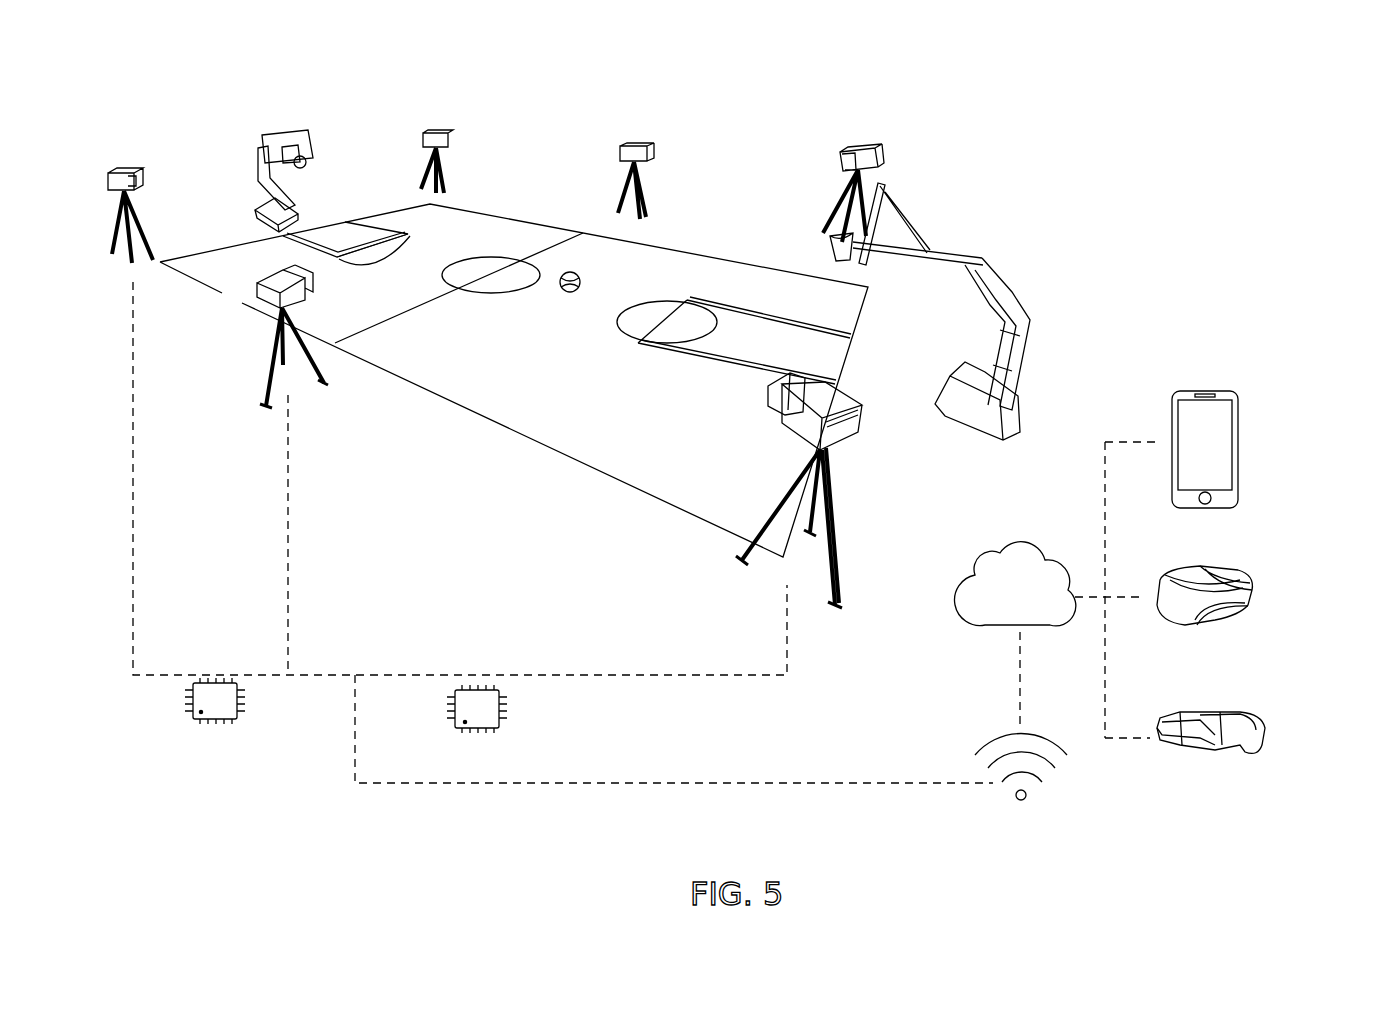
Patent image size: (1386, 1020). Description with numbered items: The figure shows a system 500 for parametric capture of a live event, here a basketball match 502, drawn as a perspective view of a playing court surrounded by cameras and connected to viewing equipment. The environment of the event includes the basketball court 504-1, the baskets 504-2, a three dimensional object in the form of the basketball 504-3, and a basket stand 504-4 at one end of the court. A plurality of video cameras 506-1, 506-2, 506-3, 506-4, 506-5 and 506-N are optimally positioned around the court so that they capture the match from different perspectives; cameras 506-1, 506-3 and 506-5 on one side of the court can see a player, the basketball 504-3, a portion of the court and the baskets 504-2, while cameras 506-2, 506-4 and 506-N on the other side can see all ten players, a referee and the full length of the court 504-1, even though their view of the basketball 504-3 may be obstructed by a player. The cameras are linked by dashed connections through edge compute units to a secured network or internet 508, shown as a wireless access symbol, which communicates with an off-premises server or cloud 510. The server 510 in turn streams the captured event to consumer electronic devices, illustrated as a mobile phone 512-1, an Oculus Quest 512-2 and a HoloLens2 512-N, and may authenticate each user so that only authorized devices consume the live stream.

The system 500 is at (1168, 75).
The basketball match 502 is at (707, 152).
The basketball court 504-1 is at (433, 232).
The baskets 504-2 is at (282, 127).
The basketball 504-3 is at (574, 266).
The object (basketball hoop) 504-4 is at (920, 228).
The video camera 506-1 is at (124, 165).
The video camera 506-2 is at (432, 128).
The video camera 506-3 is at (262, 311).
The video camera 506-4 is at (623, 141).
The video camera 506-5 is at (848, 441).
The video camera 506-N is at (857, 146).
The secured network or internet 508 is at (1043, 829).
The server or cloud 510 is at (1041, 613).
The mobile phone 512-1 is at (1244, 446).
The Oculus Quest 512-2 is at (1248, 573).
The HoloLens2 512-N is at (1248, 708).